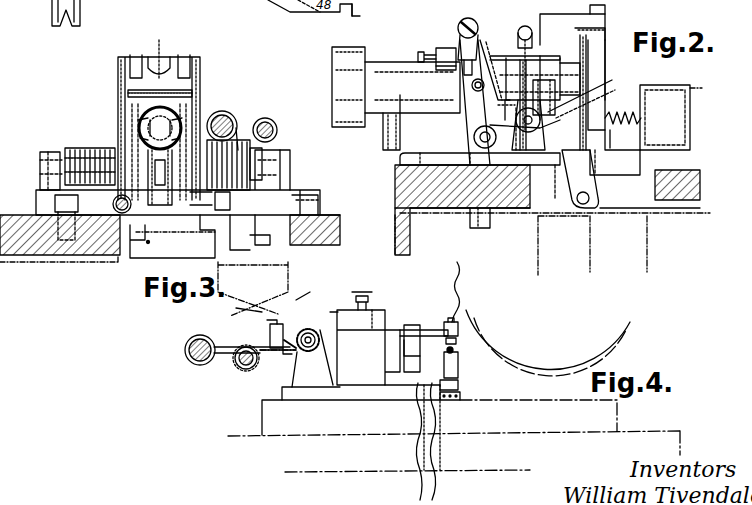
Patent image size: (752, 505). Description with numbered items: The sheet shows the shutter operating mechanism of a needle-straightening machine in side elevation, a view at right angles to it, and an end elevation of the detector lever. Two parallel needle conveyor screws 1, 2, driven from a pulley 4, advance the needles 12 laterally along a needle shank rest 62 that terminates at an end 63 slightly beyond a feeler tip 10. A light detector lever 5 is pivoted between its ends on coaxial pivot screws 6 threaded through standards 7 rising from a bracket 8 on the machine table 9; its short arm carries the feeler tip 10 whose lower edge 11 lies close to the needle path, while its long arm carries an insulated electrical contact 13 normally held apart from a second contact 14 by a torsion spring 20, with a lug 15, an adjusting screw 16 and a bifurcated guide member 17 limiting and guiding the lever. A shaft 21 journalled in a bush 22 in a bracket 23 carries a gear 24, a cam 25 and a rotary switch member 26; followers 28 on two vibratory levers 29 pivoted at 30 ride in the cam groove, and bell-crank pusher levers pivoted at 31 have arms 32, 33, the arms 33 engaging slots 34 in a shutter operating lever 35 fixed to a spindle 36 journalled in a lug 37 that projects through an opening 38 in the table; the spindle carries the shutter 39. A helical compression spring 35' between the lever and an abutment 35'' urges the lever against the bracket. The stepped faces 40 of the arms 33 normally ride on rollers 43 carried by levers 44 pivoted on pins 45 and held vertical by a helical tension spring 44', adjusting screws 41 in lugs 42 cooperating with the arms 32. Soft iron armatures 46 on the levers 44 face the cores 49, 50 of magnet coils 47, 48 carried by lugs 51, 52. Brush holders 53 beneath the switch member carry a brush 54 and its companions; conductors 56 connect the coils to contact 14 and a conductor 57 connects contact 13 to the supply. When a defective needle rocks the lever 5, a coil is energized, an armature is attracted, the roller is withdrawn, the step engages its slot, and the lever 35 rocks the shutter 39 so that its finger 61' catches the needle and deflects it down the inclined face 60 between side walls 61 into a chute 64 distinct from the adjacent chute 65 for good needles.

In FIG. 3, the needle conveyor screw 1 is at (283, 120).
In FIG. 4, the needle conveyor screw 1 is at (236, 366).
In FIG. 3, the needle conveyor screw 2 is at (223, 119).
In FIG. 4, the needle conveyor screw 2 is at (193, 363).
In FIG. 3, the pulley 4 is at (82, 12).
In FIG. 4, the detector lever 5 is at (322, 335).
In FIG. 4, the pivot screws 6 is at (310, 329).
In FIG. 4, the standards 7 is at (300, 372).
In FIG. 4, the bracket 8 is at (282, 396).
In FIG. 3, the machine table 9 is at (98, 248).
In FIG. 2, the machine table 9 is at (396, 182).
In FIG. 4, the machine table 9 is at (240, 437).
In FIG. 4, the feeler tip 10 is at (270, 334).
In FIG. 4, the lower edge of feeler tip 11 is at (276, 352).
In FIG. 4, the needles 12 is at (256, 366).
In FIG. 4, the electrical contact 13 is at (466, 340).
In FIG. 4, the second electrical contact 14 is at (460, 354).
In FIG. 4, the lug 15 is at (365, 344).
In FIG. 4, the adjusting screw 16 is at (370, 298).
In FIG. 4, the bifurcated guide member 17 is at (410, 325).
In FIG. 4, the torsion spring 20 is at (300, 332).
In FIG. 3, the shaft 21 is at (160, 128).
In FIG. 2, the shaft 21 is at (372, 122).
In FIG. 2, the bush 22 is at (398, 115).
In FIG. 3, the bracket 23 is at (320, 200).
In FIG. 2, the bracket 23 is at (404, 159).
In FIG. 2, the gear 24 is at (334, 56).
In FIG. 2, the cam 25 is at (495, 68).
In FIG. 3, the rotary switch member 26 is at (135, 106).
In FIG. 2, the rotary switch member 26 is at (548, 50).
In FIG. 3, the followers 28 is at (138, 120).
In FIG. 2, the followers 28 is at (478, 95).
In FIG. 3, the vibratory levers 29 is at (140, 138).
In FIG. 2, the vibratory levers 29 is at (476, 130).
In FIG. 2, the pivotal connection 30 is at (452, 195).
In FIG. 2, the pivotal connection 31 is at (468, 19).
In FIG. 2, the pusher lever arm 32 is at (459, 38).
In FIG. 3, the pusher lever arm 33 is at (133, 52).
In FIG. 2, the pusher lever arm 33 is at (543, 18).
In FIG. 3, the slots 34 is at (118, 60).
In FIG. 2, the slots 34 is at (607, 32).
In FIG. 3, the shutter operating lever 35 is at (172, 236).
In FIG. 2, the shutter operating lever 35 is at (607, 85).
In FIG. 3, the spindle 36 is at (130, 250).
In FIG. 2, the spindle 36 is at (590, 198).
In FIG. 3, the lug 37 is at (246, 289).
In FIG. 2, the lug 37 is at (578, 208).
In FIG. 3, the opening 38 is at (280, 248).
In FIG. 2, the opening 38 is at (655, 180).
In FIG. 3, the shutter 39 is at (250, 222).
In FIG. 2, the shutter 39 is at (600, 145).
In FIG. 2, the step 40 is at (606, 20).
In FIG. 2, the adjusting screws 41 is at (418, 55).
In FIG. 2, the lugs 42 is at (446, 48).
In FIG. 3, the rollers 43 is at (126, 82).
In FIG. 2, the rollers 43 is at (516, 40).
In FIG. 3, the levers 44 is at (157, 160).
In FIG. 2, the levers 44 is at (540, 79).
In FIG. 3, the helical tension spring 44' is at (156, 51).
In FIG. 2, the helical tension spring 44' is at (543, 79).
In FIG. 3, the pins 45 is at (125, 212).
In FIG. 3, the soft iron armatures 46 is at (62, 225).
In FIG. 3, the magnet coil 47 is at (231, 193).
In FIG. 3, the magnet coil 48 is at (66, 150).
In FIG. 2, the magnet coil 48 is at (550, 88).
In FIG. 3, the core 49 is at (288, 165).
In FIG. 3, the core 50 is at (40, 156).
In FIG. 2, the core 50 is at (544, 182).
In FIG. 3, the lug 51 is at (285, 178).
In FIG. 3, the lug 52 is at (40, 168).
In FIG. 2, the lug 52 is at (538, 155).
In FIG. 3, the brush holders 53 is at (170, 205).
In FIG. 2, the brush holders 53 is at (490, 125).
In FIG. 2, the brush 54 is at (531, 98).
In FIG. 4, the conductors 56 is at (436, 490).
In FIG. 4, the conductor 57 is at (448, 286).
In FIG. 2, the inclined face 60 is at (545, 130).
In FIG. 2, the side walls 61 is at (594, 92).
In FIG. 3, the finger 61' is at (246, 127).
In FIG. 2, the needle shank rest 62 is at (640, 80).
In FIG. 2, the end of needle shank rest 63 is at (678, 94).
In FIG. 3, the chute 64 is at (224, 306).
In FIG. 2, the chute 64 is at (536, 242).
In FIG. 3, the chute 65 is at (310, 292).
In FIG. 2, the chute 65 is at (649, 255).
In FIG. 2, the helical compression spring 35' is at (632, 139).
In FIG. 2, the abutment 35'' is at (646, 119).